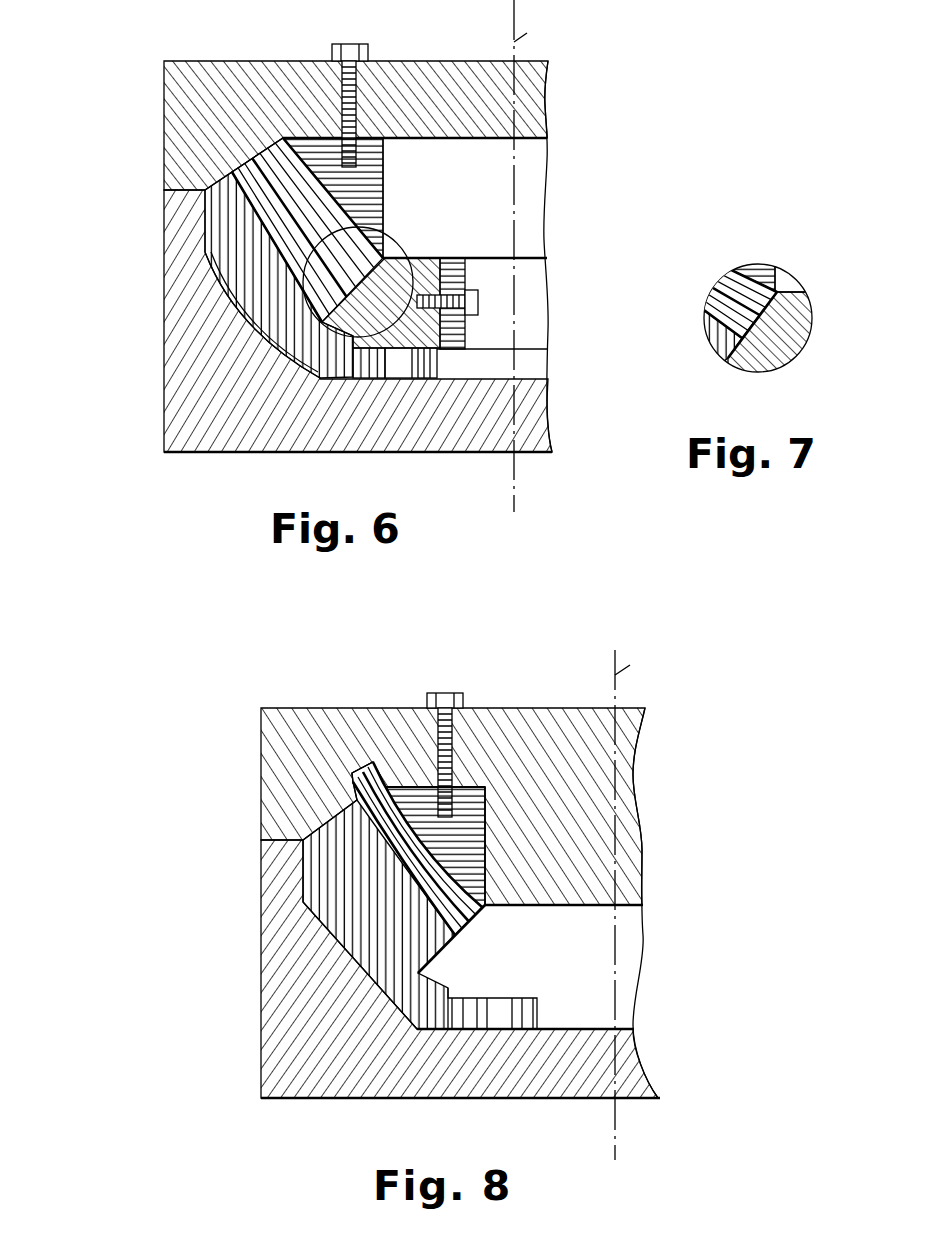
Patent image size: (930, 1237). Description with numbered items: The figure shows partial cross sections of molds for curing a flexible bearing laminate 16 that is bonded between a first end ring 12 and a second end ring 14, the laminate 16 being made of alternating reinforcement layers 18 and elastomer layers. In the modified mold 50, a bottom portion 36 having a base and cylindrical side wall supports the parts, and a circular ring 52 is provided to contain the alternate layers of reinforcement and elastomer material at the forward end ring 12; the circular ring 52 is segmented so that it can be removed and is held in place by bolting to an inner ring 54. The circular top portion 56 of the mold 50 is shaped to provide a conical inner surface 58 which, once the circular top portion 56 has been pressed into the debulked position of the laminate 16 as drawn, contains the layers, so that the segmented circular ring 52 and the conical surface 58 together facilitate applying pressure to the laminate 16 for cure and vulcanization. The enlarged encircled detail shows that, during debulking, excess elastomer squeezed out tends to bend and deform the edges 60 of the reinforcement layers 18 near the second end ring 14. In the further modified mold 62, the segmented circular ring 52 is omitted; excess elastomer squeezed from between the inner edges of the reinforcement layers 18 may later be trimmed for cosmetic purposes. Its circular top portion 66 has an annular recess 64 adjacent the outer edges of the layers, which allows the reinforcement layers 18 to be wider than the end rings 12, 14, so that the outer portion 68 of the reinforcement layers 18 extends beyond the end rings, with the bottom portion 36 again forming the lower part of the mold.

In FIG. 6, the modified mold 50 is at (146, 91).
In FIG. 6, the circular top portion 56 is at (249, 78).
In FIG. 6, the conical inner surface 58 is at (265, 153).
In FIG. 6, the second end ring 14 is at (373, 166).
In FIG. 7, the second end ring 14 is at (760, 272).
In FIG. 8, the second end ring 14 is at (490, 905).
In FIG. 6, the laminate 16 is at (330, 221).
In FIG. 6, the first end ring 12 is at (213, 237).
In FIG. 8, the first end ring 12 is at (310, 888).
In FIG. 6, the circular ring 52 is at (418, 268).
In FIG. 6, the inner ring 54 is at (463, 276).
In FIG. 6, the bottom portion 36 is at (175, 390).
In FIG. 8, the bottom portion 36 is at (272, 1037).
In FIG. 7, the edges of the reinforcement layers 60 is at (738, 325).
In FIG. 8, the modified mold 62 is at (238, 723).
In FIG. 8, the circular top portion 66 is at (298, 722).
In FIG. 8, the outer portion of the reinforcement layers 68 is at (366, 768).
In FIG. 8, the annular recess 64 is at (348, 793).
In FIG. 8, the reinforcement layers 18 is at (388, 840).